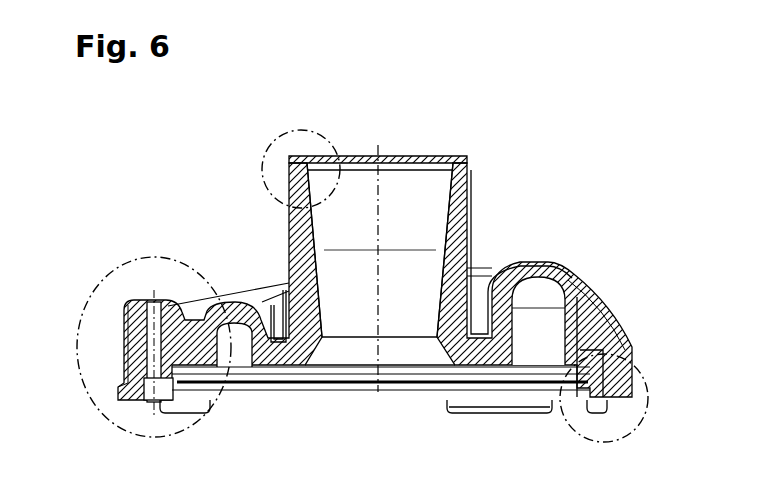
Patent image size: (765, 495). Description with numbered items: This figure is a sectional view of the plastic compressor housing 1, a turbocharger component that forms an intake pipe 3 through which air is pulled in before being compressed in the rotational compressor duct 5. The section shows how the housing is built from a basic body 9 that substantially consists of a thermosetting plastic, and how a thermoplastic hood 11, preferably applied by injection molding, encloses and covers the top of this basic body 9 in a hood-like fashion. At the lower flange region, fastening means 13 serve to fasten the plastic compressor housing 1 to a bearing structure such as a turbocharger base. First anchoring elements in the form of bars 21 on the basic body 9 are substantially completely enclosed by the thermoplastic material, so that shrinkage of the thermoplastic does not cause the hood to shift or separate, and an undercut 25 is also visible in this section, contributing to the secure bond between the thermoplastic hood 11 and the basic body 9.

The plastic compressor housing 1 is at (476, 152).
The intake pipe 3 is at (416, 220).
The rotational compressor duct 5 is at (240, 363).
The basic body 9 is at (468, 197).
The thermoplastic hood 11 is at (595, 302).
The fastening means 13 is at (138, 405).
The bars 21 is at (610, 405).
The undercut 25 is at (118, 378).